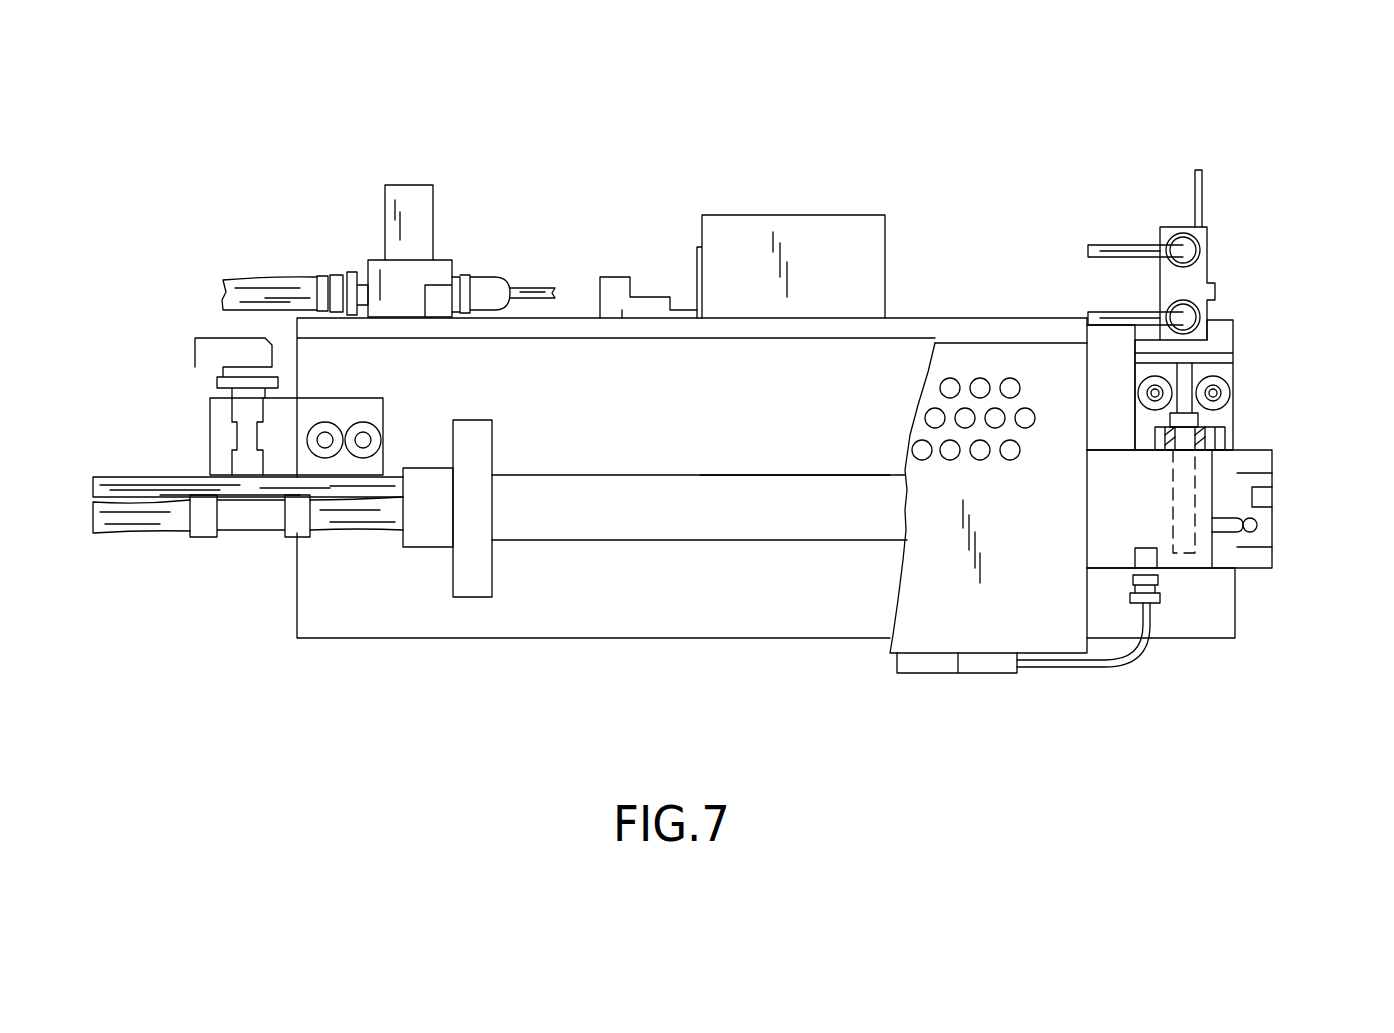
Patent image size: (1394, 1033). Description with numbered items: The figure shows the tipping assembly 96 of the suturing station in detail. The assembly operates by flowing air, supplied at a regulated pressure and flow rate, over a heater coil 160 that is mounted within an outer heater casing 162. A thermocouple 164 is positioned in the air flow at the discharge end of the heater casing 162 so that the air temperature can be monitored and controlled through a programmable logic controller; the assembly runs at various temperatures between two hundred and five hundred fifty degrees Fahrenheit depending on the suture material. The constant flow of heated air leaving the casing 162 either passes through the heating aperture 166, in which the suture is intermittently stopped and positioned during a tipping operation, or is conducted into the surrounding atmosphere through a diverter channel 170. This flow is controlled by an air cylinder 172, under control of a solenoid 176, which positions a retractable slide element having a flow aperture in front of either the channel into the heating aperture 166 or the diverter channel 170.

The tipping assembly 96 is at (240, 100).
The heater coil 160 is at (677, 488).
The outer heater casing 162 is at (787, 473).
The thermocouple 164 is at (1158, 583).
The heating aperture 166 is at (1258, 521).
The diverter channel 170 is at (1272, 488).
The air cylinder 172 is at (1233, 373).
The solenoid 176 is at (448, 258).